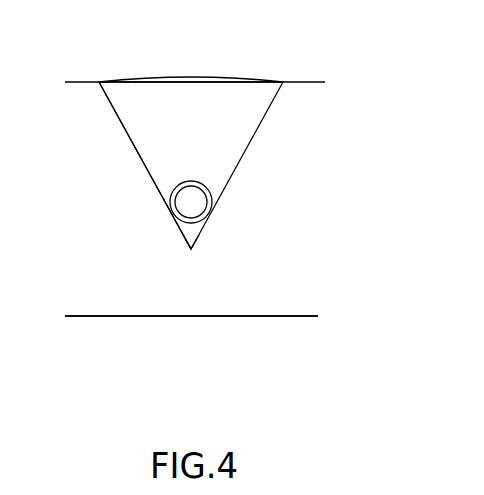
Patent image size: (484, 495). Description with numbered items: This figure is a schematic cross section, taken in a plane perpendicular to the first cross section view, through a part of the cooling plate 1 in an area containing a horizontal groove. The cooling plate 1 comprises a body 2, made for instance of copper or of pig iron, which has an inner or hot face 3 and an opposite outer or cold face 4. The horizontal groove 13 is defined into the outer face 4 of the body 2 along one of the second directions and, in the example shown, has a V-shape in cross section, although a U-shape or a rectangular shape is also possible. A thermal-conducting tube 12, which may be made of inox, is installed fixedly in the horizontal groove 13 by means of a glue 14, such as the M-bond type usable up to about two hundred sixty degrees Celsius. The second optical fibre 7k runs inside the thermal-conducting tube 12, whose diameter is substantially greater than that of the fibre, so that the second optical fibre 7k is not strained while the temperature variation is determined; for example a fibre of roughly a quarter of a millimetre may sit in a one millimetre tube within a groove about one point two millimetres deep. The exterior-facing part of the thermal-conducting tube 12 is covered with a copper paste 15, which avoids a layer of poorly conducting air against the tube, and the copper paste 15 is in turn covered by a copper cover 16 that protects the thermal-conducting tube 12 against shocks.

The cooling plate 1 is at (255, 316).
The body 2 is at (195, 350).
The inner face 3 is at (126, 321).
The outer face 4 is at (86, 78).
The second optical fibre 7k is at (168, 196).
The thermal-conducting tube 12 is at (177, 200).
The horizontal groove 13 is at (126, 133).
The glue 14 is at (200, 233).
The copper paste 15 is at (245, 100).
The copper cover 16 is at (193, 78).